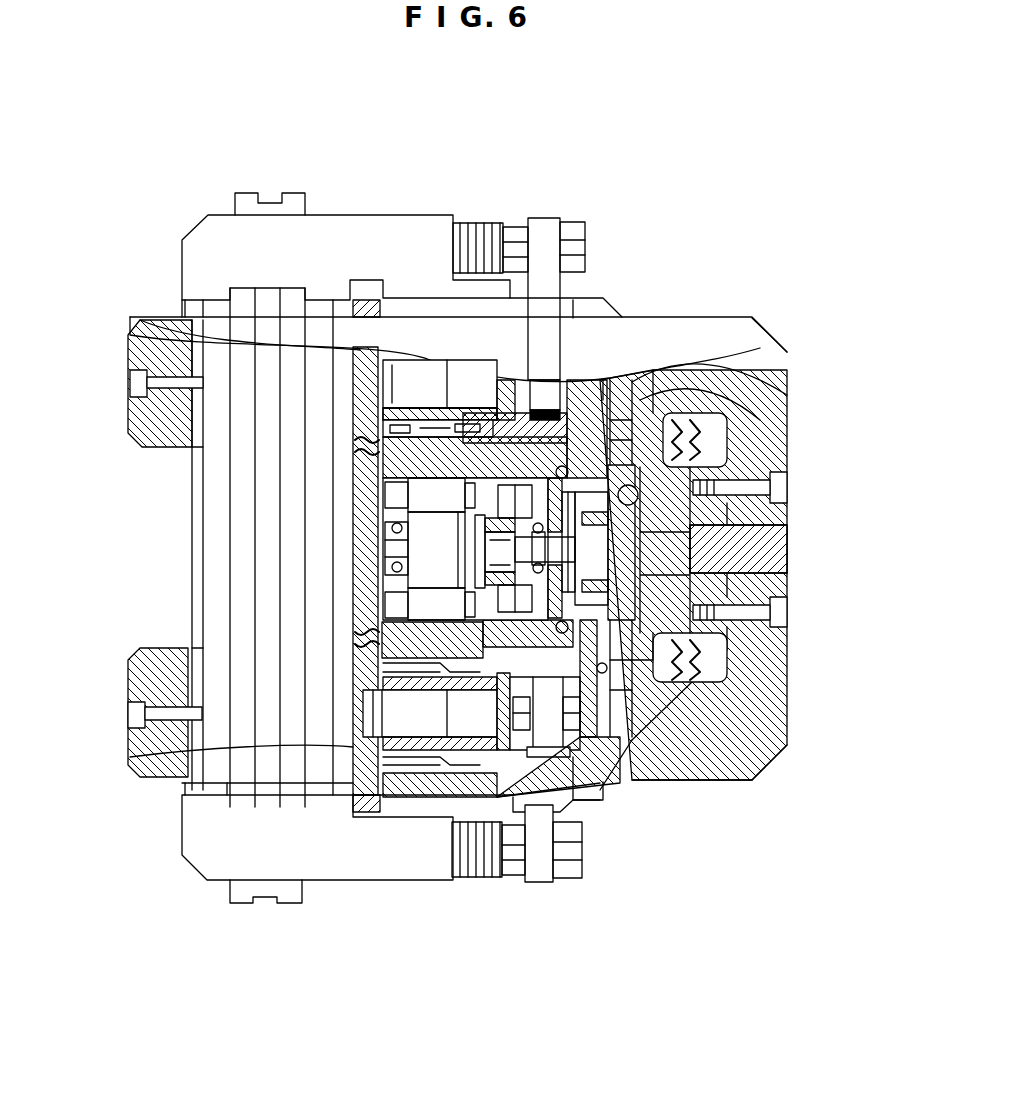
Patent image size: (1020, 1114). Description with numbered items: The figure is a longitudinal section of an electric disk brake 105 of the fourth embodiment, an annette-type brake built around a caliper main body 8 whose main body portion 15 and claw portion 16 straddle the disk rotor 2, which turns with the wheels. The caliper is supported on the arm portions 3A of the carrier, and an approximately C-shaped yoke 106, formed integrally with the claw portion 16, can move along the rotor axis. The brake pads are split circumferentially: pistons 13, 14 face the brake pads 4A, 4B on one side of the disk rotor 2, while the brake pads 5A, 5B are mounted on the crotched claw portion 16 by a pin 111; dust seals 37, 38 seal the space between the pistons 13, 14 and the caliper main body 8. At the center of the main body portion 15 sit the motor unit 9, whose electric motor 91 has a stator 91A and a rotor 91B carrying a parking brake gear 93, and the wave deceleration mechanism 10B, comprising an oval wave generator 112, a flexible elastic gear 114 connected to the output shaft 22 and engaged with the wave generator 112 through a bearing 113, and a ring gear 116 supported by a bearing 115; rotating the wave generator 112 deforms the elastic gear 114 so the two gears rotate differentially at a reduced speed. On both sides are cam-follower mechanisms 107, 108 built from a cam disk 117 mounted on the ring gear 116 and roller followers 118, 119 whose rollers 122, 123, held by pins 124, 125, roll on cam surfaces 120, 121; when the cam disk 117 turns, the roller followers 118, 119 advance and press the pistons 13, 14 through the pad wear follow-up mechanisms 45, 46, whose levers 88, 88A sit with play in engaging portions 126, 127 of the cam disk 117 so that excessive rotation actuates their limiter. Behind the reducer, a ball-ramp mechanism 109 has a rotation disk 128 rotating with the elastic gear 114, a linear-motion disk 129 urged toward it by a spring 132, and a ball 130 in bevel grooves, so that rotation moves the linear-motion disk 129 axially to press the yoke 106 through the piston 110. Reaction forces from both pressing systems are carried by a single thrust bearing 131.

The disk rotor 2 is at (243, 200).
The arm portion 3A is at (388, 245).
The brake pad 4A is at (320, 800).
The brake pad 4B is at (318, 370).
The brake pad 5A is at (213, 775).
The brake pad 5B is at (222, 355).
The caliper main body 8 is at (609, 197).
The motor/control unit 9 is at (380, 525).
The wave deceleration mechanism 10B is at (628, 378).
The piston 13 is at (230, 737).
The piston 14 is at (290, 455).
The main body portion 15 is at (570, 300).
The claw portion 16 is at (157, 415).
The output shaft 22 is at (340, 628).
The dust seal 37 is at (358, 790).
The dust seal 38 is at (300, 478).
The pad wear follow-up mechanism 45 is at (493, 712).
The pad wear follow-up mechanism 46 is at (436, 333).
The lever 88 is at (300, 660).
The lever 88A is at (518, 383).
The electric motor 91 is at (280, 549).
The stator 91A is at (420, 548).
The rotor 91B is at (420, 580).
The parking brake gear 93 is at (360, 505).
The electric disk brake 105 is at (722, 143).
The yoke 106 is at (760, 372).
The cam-follower mechanism 107 is at (577, 750).
The cam-follower mechanism 108 is at (593, 382).
The ball-ramp mechanism 109 is at (700, 447).
The piston 110 is at (772, 537).
The pin 111 is at (140, 382).
The wave generator 112 is at (700, 575).
The bearing 113 is at (553, 747).
The elastic gear 114 is at (660, 680).
The bearing 115 is at (690, 392).
The ring gear 116 is at (695, 417).
The cam disk 117 is at (615, 700).
The roller follower 118 is at (445, 757).
The roller follower 119 is at (465, 268).
The cam surface 120 is at (598, 735).
The cam surface 121 is at (578, 395).
The roller 122 is at (522, 813).
The roller 123 is at (503, 380).
The pin 124 is at (580, 882).
The pin 125 is at (546, 385).
The engaging portion 126 is at (678, 772).
The engaging portion 127 is at (772, 362).
The rotation disk 128 is at (727, 565).
The linear-motion disk 129 is at (730, 517).
The ball 130 is at (692, 480).
The thrust bearing 131 is at (752, 780).
The spring 132 is at (780, 592).